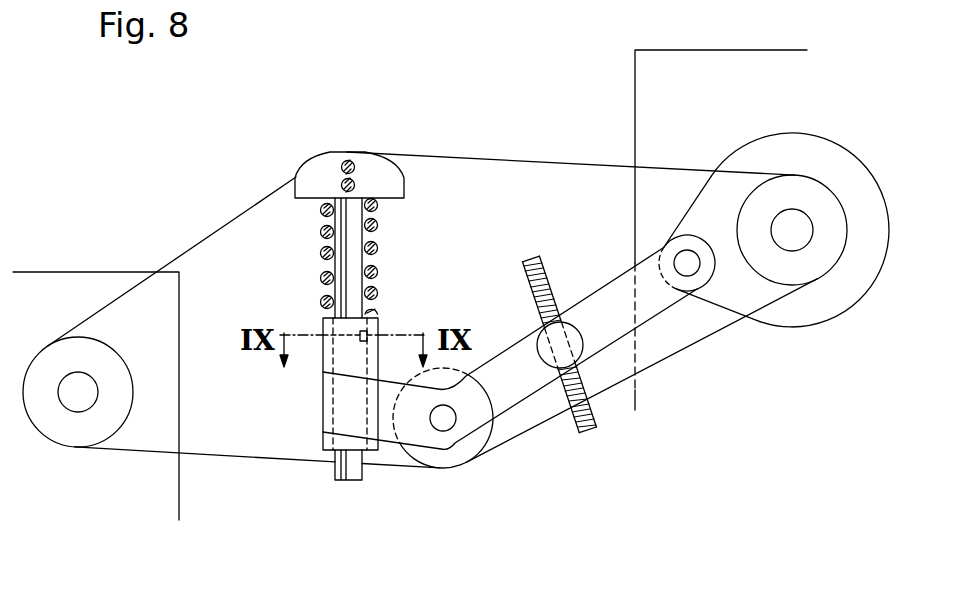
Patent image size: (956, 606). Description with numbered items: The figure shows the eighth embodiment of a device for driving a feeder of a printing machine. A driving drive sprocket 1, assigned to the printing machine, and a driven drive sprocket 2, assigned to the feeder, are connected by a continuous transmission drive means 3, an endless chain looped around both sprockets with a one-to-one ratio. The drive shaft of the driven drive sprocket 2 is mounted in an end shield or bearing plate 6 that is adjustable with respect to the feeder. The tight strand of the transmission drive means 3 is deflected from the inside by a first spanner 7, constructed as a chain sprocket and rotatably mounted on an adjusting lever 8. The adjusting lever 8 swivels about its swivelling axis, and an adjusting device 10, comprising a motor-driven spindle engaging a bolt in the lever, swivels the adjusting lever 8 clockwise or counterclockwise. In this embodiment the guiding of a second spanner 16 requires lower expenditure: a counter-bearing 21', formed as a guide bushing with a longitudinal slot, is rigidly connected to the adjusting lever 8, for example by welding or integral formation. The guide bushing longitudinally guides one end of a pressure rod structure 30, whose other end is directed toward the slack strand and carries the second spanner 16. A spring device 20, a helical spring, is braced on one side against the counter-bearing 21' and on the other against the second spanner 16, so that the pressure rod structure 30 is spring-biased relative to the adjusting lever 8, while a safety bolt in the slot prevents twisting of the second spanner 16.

The driving drive sprocket 1 is at (93, 428).
The driven drive sprocket 2 is at (815, 262).
The transmission drive means 3 is at (237, 460).
The end shield or bearing plate 6 is at (783, 318).
The first spanner 7 is at (458, 463).
The adjusting lever 8 is at (580, 306).
The adjusting device 10 is at (570, 432).
The second spanner 16 is at (331, 163).
The spring device 20 is at (375, 292).
The counter-bearing 21' is at (308, 384).
The pressure rod structure 30 is at (358, 262).